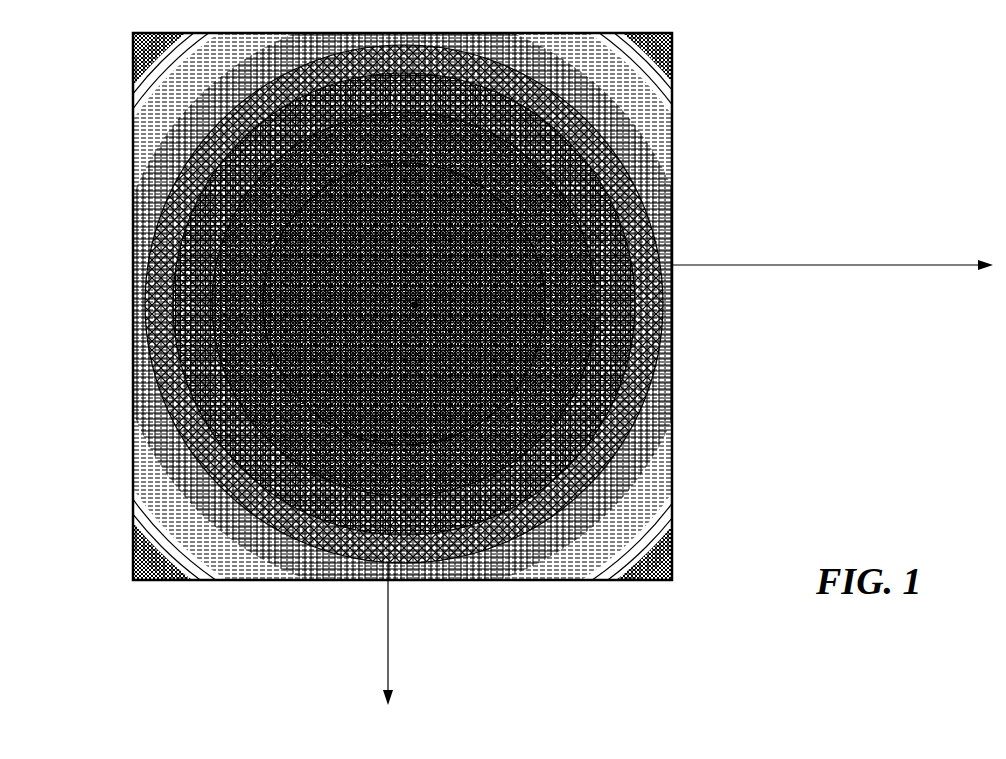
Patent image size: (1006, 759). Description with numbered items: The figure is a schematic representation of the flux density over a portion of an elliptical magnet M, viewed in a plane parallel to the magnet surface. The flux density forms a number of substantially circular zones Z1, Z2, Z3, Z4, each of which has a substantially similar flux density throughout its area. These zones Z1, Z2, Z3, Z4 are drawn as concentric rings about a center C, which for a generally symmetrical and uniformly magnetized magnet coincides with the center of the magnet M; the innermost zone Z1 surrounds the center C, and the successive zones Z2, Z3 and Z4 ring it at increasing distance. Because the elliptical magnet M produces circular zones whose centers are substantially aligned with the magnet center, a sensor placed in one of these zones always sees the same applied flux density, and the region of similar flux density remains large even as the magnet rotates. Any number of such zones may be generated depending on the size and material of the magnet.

The center C is at (410, 295).
The first flux density zone Z1 is at (404, 304).
The second flux density zone Z2 is at (404, 304).
The third flux density zone Z3 is at (406, 304).
The fourth flux density zone Z4 is at (407, 304).
The elliptical magnet M is at (724, 198).